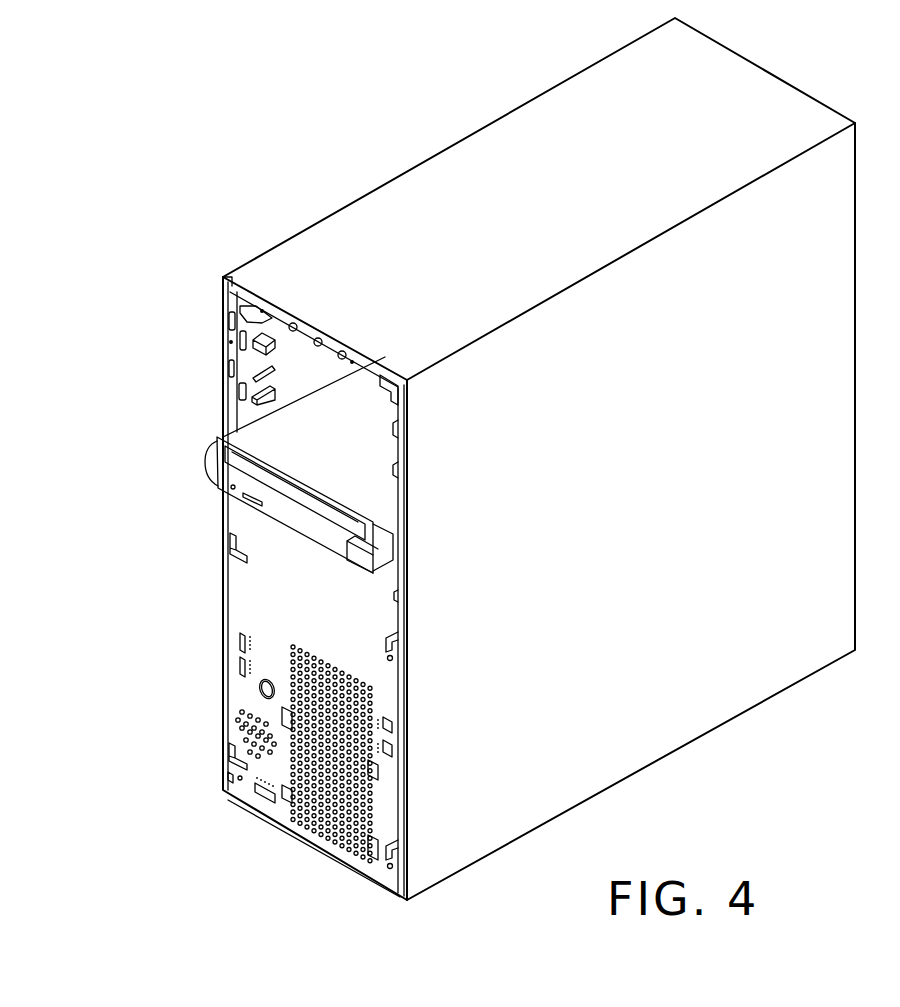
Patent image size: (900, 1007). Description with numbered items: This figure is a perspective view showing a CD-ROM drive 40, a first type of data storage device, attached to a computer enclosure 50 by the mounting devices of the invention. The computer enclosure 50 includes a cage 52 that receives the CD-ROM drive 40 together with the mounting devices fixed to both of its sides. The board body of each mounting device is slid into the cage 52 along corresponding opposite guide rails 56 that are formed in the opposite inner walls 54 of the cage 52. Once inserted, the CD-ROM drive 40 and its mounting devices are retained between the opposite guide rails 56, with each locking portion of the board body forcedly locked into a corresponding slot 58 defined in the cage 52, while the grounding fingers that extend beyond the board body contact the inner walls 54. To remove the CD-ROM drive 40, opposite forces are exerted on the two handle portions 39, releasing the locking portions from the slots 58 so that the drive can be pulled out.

The handle portion 39 is at (206, 462).
The CD-ROM drive 40 is at (258, 435).
The computer enclosure 50 is at (316, 224).
The cage 52 is at (248, 363).
The inner wall 54 is at (296, 372).
The guide rail 56 is at (262, 345).
The slot 58 is at (242, 338).